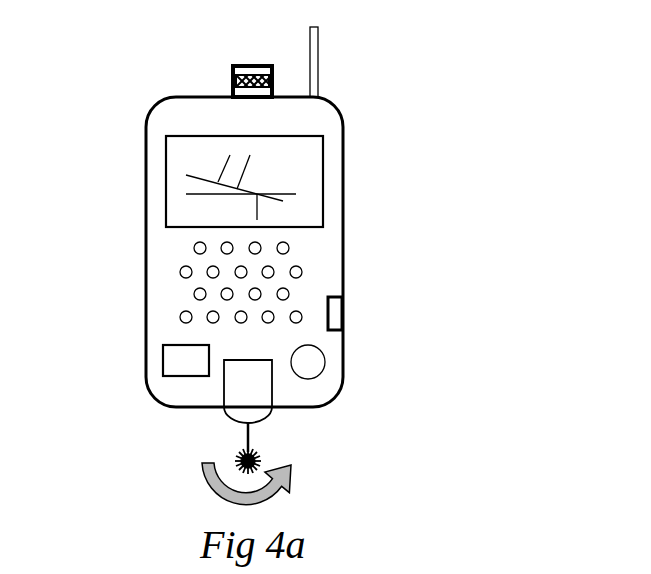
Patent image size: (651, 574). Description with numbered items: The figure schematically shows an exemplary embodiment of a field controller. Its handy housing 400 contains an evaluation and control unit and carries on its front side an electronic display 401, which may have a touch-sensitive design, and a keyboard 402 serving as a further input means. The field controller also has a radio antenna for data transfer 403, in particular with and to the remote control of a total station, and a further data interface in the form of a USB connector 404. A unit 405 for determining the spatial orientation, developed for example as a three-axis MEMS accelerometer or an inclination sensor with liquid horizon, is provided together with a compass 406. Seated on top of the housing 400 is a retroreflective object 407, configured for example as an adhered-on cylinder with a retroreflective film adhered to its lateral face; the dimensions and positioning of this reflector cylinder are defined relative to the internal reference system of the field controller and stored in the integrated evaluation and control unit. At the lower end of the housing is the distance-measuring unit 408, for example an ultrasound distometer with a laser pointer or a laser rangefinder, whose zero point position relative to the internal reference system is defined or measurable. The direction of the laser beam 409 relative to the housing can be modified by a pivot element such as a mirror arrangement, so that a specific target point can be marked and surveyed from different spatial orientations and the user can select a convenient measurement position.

The housing 400 is at (343, 244).
The electronic display 401 is at (312, 166).
The keyboard 402 is at (182, 285).
The radio antenna for data transfer 403 is at (319, 65).
The USB connector 404 is at (343, 310).
The unit for determining the spatial orientation 405 is at (172, 361).
The compass 406 is at (325, 362).
The retroreflective object 407 is at (232, 72).
The distance-measuring unit 408 is at (252, 395).
The laser beam 409 is at (240, 437).